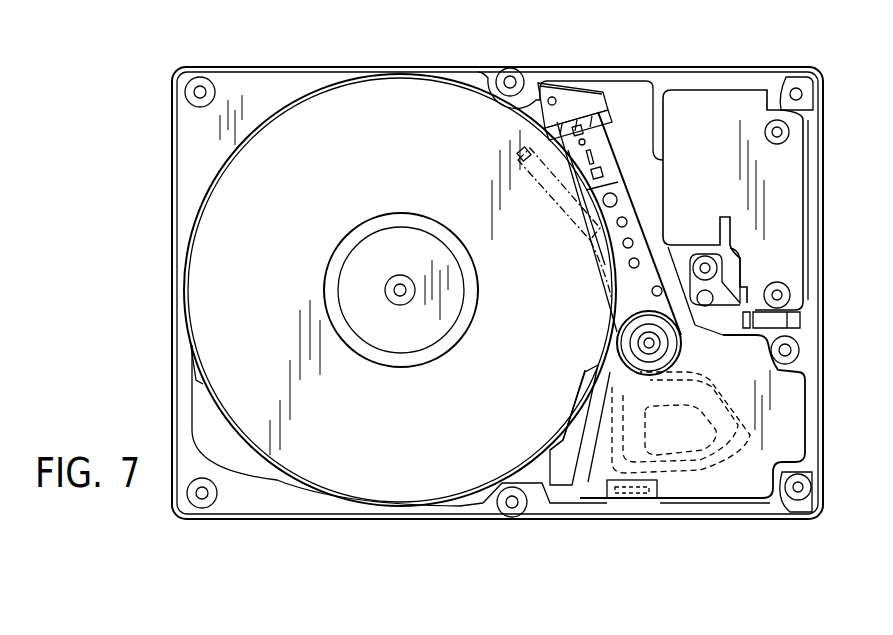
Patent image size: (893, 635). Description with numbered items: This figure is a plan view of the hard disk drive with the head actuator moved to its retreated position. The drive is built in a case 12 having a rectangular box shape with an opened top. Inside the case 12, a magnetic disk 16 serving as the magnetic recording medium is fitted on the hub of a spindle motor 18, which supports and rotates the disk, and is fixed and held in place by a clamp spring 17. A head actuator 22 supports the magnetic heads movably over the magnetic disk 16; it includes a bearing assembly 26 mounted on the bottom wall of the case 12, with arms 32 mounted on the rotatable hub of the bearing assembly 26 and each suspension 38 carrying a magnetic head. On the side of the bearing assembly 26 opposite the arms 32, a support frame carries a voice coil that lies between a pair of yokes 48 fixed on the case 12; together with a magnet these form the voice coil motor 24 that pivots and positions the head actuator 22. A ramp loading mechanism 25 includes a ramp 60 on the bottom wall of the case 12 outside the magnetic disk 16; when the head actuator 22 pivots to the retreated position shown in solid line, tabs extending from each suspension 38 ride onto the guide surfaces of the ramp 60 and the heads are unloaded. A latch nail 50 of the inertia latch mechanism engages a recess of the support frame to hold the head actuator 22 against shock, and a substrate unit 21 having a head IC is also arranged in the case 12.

The case 12 is at (262, 80).
The magnetic disk 16 is at (402, 95).
The clamp spring 17 is at (401, 343).
The spindle motor 18 is at (325, 292).
The substrate unit 21 is at (712, 88).
The head actuator 22 is at (620, 195).
The voice coil motor 24 is at (600, 420).
The ramp loading mechanism 25 is at (505, 58).
The bearing assembly 26 is at (618, 345).
The arm 32 is at (641, 238).
The suspension 38 is at (606, 165).
The yoke 48 is at (798, 396).
The latch nail 50 is at (628, 504).
The ramp 60 is at (598, 96).